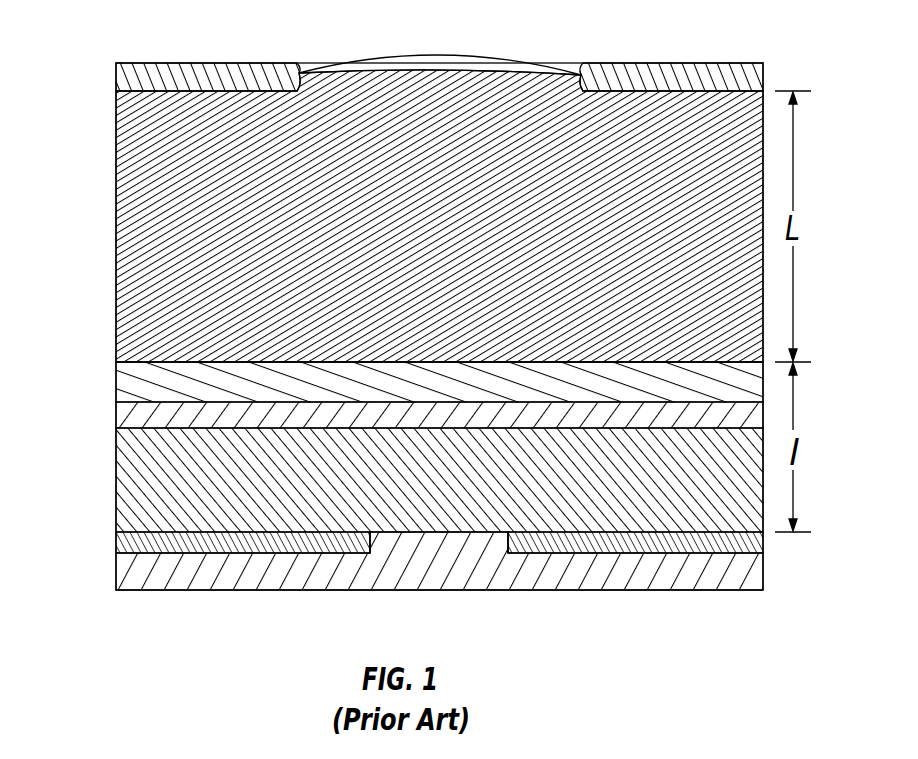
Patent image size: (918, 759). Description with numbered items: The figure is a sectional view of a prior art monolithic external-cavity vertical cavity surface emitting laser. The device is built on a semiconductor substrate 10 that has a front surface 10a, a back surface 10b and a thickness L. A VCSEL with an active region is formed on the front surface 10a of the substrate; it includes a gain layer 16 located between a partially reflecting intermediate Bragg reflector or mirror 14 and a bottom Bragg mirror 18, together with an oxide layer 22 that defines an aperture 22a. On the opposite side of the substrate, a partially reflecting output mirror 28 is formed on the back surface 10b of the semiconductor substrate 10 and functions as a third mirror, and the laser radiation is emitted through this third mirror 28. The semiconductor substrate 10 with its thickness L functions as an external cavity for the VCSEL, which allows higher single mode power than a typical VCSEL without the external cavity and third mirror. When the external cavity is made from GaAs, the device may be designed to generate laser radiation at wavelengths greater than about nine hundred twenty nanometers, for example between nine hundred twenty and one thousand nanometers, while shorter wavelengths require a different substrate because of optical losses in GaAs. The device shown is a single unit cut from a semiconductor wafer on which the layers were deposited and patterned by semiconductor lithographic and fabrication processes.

The semiconductor substrate 10 is at (128, 192).
The front surface 10a is at (140, 362).
The back surface 10b is at (117, 91).
The intermediate Bragg reflector 14 is at (128, 388).
The gain layer 16 is at (125, 418).
The bottom Bragg mirror 18 is at (128, 483).
The oxide layer 22 is at (128, 546).
The aperture 22a is at (407, 540).
The output mirror 28 is at (497, 54).